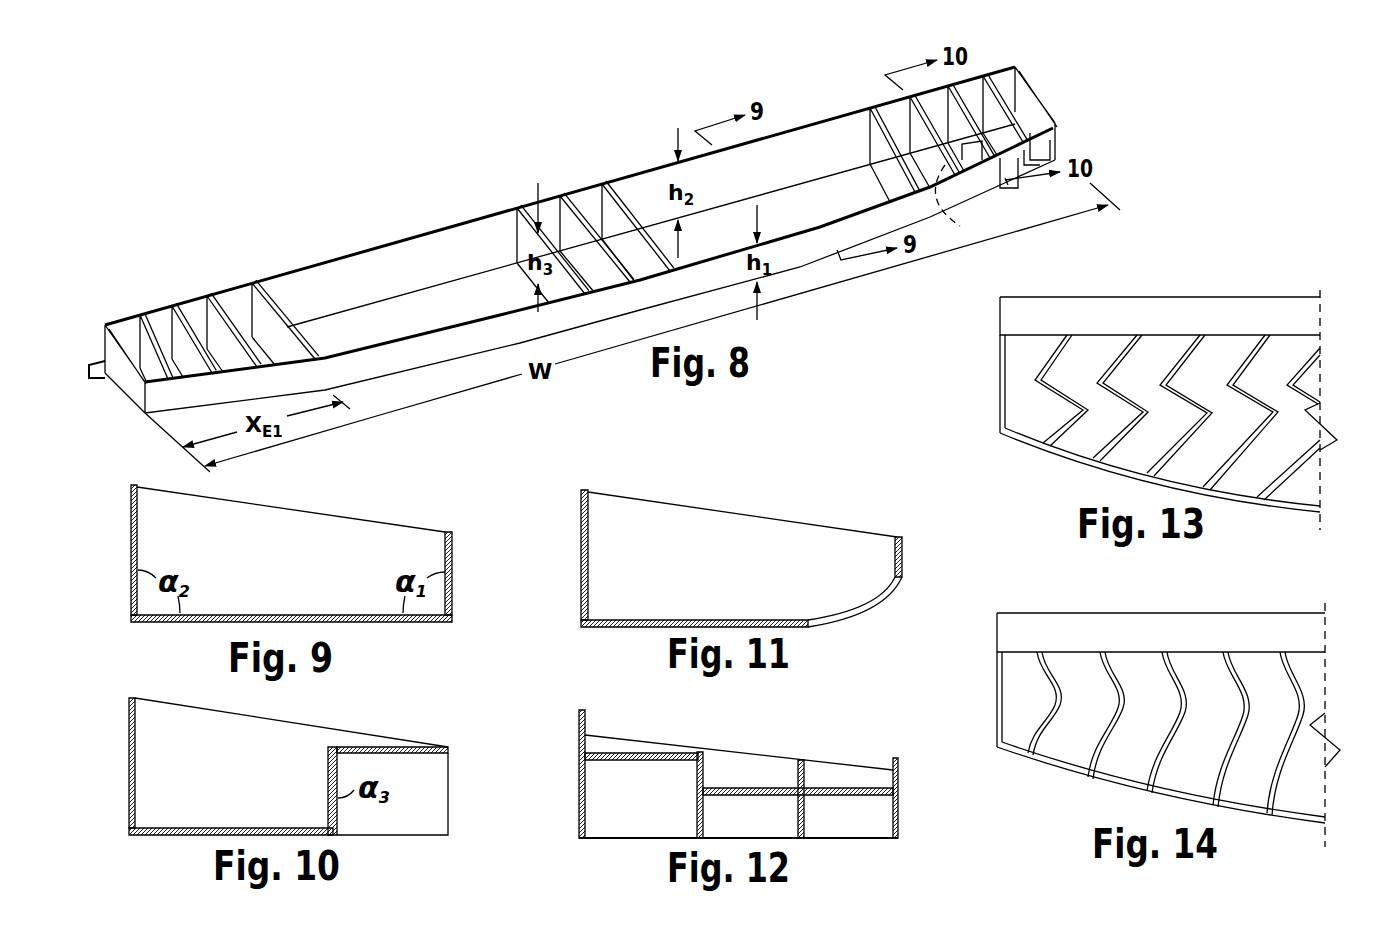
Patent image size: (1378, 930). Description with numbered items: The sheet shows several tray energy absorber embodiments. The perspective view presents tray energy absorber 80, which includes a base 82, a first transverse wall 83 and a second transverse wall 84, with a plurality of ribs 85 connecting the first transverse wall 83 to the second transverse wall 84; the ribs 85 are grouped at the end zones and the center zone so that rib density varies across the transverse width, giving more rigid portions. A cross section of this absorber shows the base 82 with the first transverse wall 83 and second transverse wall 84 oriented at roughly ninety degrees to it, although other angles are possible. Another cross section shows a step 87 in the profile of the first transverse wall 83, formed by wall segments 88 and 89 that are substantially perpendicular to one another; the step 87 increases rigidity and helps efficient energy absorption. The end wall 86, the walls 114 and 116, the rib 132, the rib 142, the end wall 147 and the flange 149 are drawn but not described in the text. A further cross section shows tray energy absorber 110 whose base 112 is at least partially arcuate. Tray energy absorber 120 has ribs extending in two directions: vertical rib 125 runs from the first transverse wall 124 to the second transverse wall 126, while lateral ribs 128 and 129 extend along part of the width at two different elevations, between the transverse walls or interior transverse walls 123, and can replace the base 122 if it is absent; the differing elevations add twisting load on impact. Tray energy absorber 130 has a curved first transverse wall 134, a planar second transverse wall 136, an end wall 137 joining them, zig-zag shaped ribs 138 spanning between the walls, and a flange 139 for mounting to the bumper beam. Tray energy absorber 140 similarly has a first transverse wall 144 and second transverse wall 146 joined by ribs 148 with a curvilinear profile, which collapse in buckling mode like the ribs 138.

In FIG. 8, the tray energy absorber 80 is at (331, 182).
In FIG. 8, the base 82 is at (388, 320).
In FIG. 9, the base 82 is at (267, 613).
In FIG. 10, the base 82 is at (168, 827).
In FIG. 8, the first transverse wall 83 is at (420, 350).
In FIG. 8, the second transverse wall 84 is at (434, 260).
In FIG. 9, the second transverse wall 84 is at (452, 575).
In FIG. 8, the ribs 85 is at (183, 333).
In FIG. 8, the end side wall 86 is at (103, 362).
In FIG. 9, the end side wall 86 is at (130, 536).
In FIG. 10, the end side wall 86 is at (129, 769).
In FIG. 8, the step 87 is at (990, 193).
In FIG. 8, the wall segment 88 is at (956, 197).
In FIG. 10, the wall segment 88 is at (328, 785).
In FIG. 8, the wall segment 89 is at (982, 162).
In FIG. 10, the wall segment 89 is at (373, 772).
In FIG. 11, the tray energy absorber 110 is at (817, 510).
In FIG. 11, the base 112 is at (852, 612).
In FIG. 11, the short side wall 114 is at (903, 558).
In FIG. 11, the tall side wall 116 is at (588, 555).
In FIG. 12, the tray energy absorber 120 is at (588, 847).
In FIG. 12, the base 122 is at (620, 838).
In FIG. 12, the interior transverse walls 123 is at (798, 815).
In FIG. 12, the first transverse wall 124 is at (900, 812).
In FIG. 12, the vertical rib 125 is at (830, 778).
In FIG. 12, the second transverse wall 126 is at (579, 790).
In FIG. 12, the lateral rib 128 is at (748, 788).
In FIG. 12, the lateral rib 129 is at (645, 758).
In FIG. 13, the tray energy absorber 130 is at (1257, 290).
In FIG. 13, the zigzag rib 132 is at (1287, 353).
In FIG. 13, the first transverse wall 134 is at (1303, 510).
In FIG. 13, the second transverse wall 136 is at (1290, 333).
In FIG. 13, the end wall 137 is at (1003, 407).
In FIG. 13, the zig-zag shaped ribs 138 is at (1233, 450).
In FIG. 13, the flange 139 is at (1213, 307).
In FIG. 14, the tray energy absorber 140 is at (1330, 630).
In FIG. 14, the wavy rib 142 is at (1302, 687).
In FIG. 14, the first transverse wall 144 is at (1307, 823).
In FIG. 14, the second transverse wall 146 is at (1300, 650).
In FIG. 14, the end wall 147 is at (1002, 713).
In FIG. 14, the ribs 148 is at (1230, 773).
In FIG. 14, the top surface 149 is at (1193, 632).